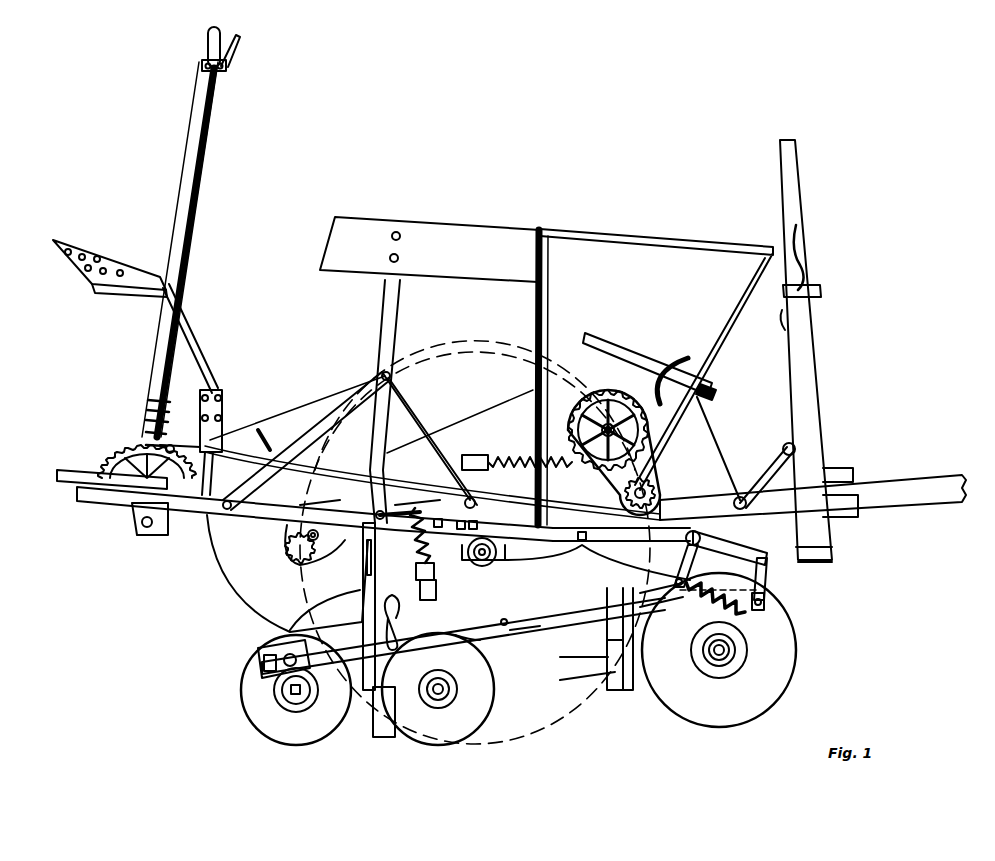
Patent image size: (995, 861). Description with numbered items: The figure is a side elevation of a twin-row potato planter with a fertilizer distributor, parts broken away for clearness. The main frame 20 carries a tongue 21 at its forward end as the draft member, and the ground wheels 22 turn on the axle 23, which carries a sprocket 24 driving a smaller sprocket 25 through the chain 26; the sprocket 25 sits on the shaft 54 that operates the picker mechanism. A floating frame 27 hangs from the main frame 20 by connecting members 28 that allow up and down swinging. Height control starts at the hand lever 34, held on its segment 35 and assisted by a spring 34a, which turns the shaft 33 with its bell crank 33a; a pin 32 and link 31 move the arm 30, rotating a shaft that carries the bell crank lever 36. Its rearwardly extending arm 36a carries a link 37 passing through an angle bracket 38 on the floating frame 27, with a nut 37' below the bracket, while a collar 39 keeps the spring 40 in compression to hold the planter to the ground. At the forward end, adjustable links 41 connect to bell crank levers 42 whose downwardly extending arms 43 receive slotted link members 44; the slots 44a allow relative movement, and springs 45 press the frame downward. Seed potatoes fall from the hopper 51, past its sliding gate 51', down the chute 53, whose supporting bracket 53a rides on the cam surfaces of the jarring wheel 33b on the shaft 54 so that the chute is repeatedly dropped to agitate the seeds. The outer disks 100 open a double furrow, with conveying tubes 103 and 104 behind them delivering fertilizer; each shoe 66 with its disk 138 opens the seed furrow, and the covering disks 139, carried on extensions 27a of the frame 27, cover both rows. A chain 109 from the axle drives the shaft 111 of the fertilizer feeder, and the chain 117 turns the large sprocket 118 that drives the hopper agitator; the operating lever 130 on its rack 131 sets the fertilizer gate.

The hand lever 34 is at (190, 197).
The link 31 is at (210, 430).
The bell crank 33a is at (180, 440).
The pin 32 is at (174, 452).
The segment 35 is at (138, 450).
The main frame 20 is at (572, 545).
The shaft 33 is at (155, 533).
The chute 53 is at (290, 425).
The supporting bracket 53a is at (332, 494).
The rearwardly extending arm 36a is at (412, 494).
The sliding gate 51' is at (254, 397).
The arm 30 is at (470, 470).
The hopper 51 is at (546, 357).
The operating lever 130 is at (632, 350).
The rack 131 is at (688, 356).
The chain 117 is at (606, 392).
The large sprocket 118 is at (640, 405).
The shaft 111 is at (655, 488).
The spring 34a is at (525, 460).
The bell crank lever 36 is at (484, 455).
The axle 23 is at (508, 552).
The chain 109 is at (597, 564).
The collar 39 is at (410, 522).
The link 37 is at (433, 548).
The nut 37' is at (443, 586).
The angle bracket 38 is at (438, 612).
The spring 40 is at (402, 622).
The chain 26 is at (378, 560).
The sprocket 25 is at (350, 592).
The shaft 54 is at (305, 540).
The jarring wheel 33b is at (315, 551).
The sprocket 24 is at (497, 622).
The floating frame 27 is at (515, 635).
The extension 27a is at (470, 630).
The connecting member 28 is at (600, 600).
The conveying tube 104 is at (582, 661).
The conveying tube 103 is at (585, 681).
The disk 138 is at (452, 728).
The covering disk 139 is at (298, 735).
The shoe 66 is at (385, 735).
The outer disk 100 is at (775, 675).
The ground wheel 22 is at (590, 736).
The bell crank lever 42 is at (762, 540).
The downwardly extending arm 43 is at (688, 564).
The adjustable link 41 is at (768, 585).
The slotted link member 44 is at (620, 560).
The slot 44a is at (705, 610).
The spring 45 is at (768, 596).
The tongue 21 is at (912, 490).